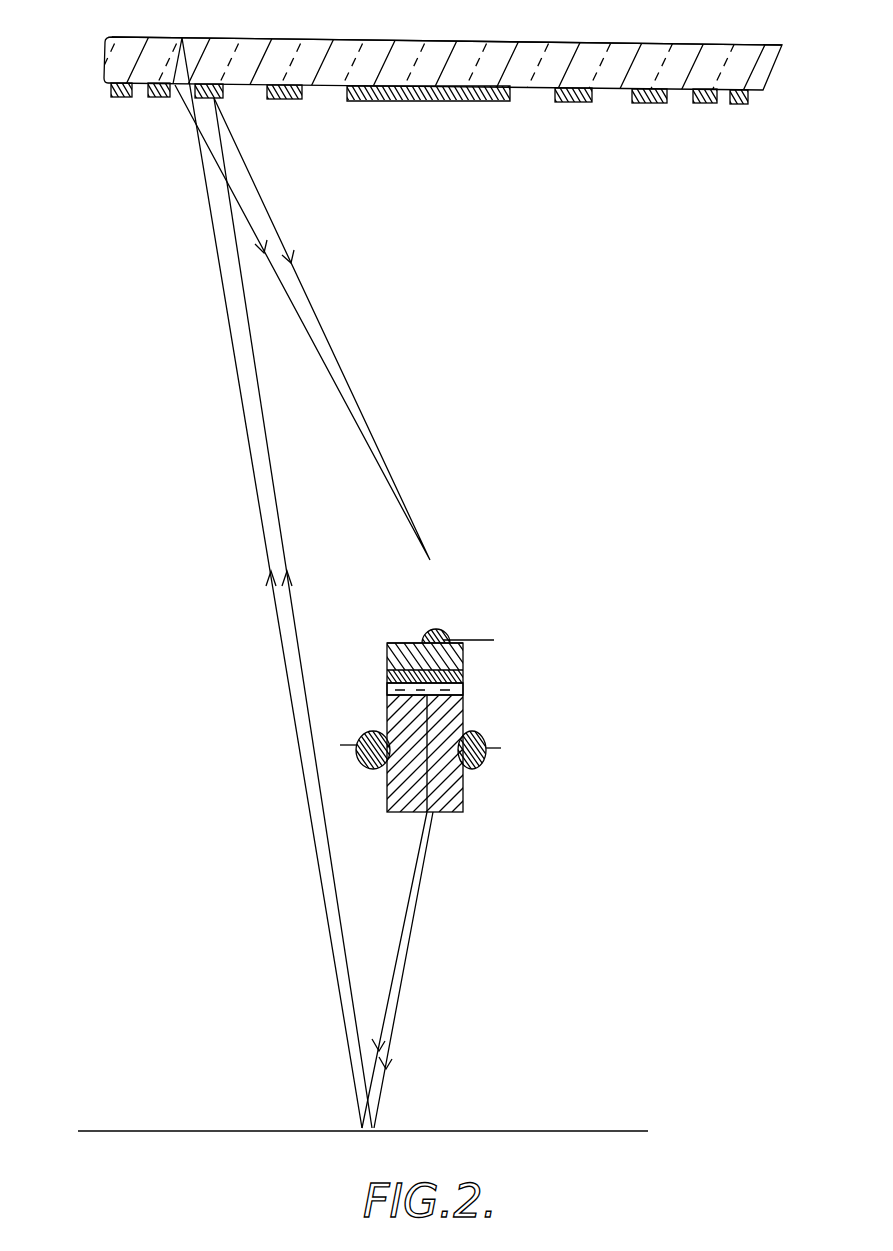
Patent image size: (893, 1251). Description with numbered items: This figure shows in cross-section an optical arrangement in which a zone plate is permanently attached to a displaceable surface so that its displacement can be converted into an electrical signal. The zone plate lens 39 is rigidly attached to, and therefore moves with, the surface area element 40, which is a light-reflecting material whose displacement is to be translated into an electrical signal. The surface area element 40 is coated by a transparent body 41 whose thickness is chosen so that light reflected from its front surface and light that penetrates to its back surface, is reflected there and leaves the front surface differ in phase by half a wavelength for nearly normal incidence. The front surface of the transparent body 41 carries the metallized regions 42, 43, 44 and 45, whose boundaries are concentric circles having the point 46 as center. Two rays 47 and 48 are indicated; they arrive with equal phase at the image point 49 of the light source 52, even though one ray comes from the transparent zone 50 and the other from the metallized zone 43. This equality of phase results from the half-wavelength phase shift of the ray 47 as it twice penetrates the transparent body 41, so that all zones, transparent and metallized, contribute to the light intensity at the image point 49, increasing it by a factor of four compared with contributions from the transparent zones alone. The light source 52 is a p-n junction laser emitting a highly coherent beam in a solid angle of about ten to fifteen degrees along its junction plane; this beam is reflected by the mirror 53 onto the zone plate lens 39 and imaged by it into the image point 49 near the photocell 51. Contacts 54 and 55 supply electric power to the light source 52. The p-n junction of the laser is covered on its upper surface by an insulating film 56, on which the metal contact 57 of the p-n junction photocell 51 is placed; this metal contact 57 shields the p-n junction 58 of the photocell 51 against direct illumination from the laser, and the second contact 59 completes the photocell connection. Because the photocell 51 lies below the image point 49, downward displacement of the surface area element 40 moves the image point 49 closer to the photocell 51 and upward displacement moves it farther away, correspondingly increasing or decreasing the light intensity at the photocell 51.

The zone plate lens 39 is at (104, 88).
The surface area element 40 is at (782, 45).
The transparent body 41 is at (742, 62).
The metallized region 42 is at (150, 99).
The metallized zone 43 is at (216, 99).
The metallized region 44 is at (276, 100).
The metallized region 45 is at (392, 101).
The center of concentric circles 46 is at (431, 101).
The ray 47 is at (226, 315).
The ray 48 is at (259, 373).
The image point 49 is at (432, 561).
The transparent zone 50 is at (173, 98).
The photocell 51 is at (477, 656).
The light source 52 is at (437, 816).
The mirror 53 is at (652, 1132).
The contact 54 is at (482, 764).
The contact 55 is at (356, 766).
The insulating film 56 is at (465, 690).
The metal contact 57 is at (464, 683).
The p-n junction 58 is at (410, 643).
The second contact 59 is at (448, 634).